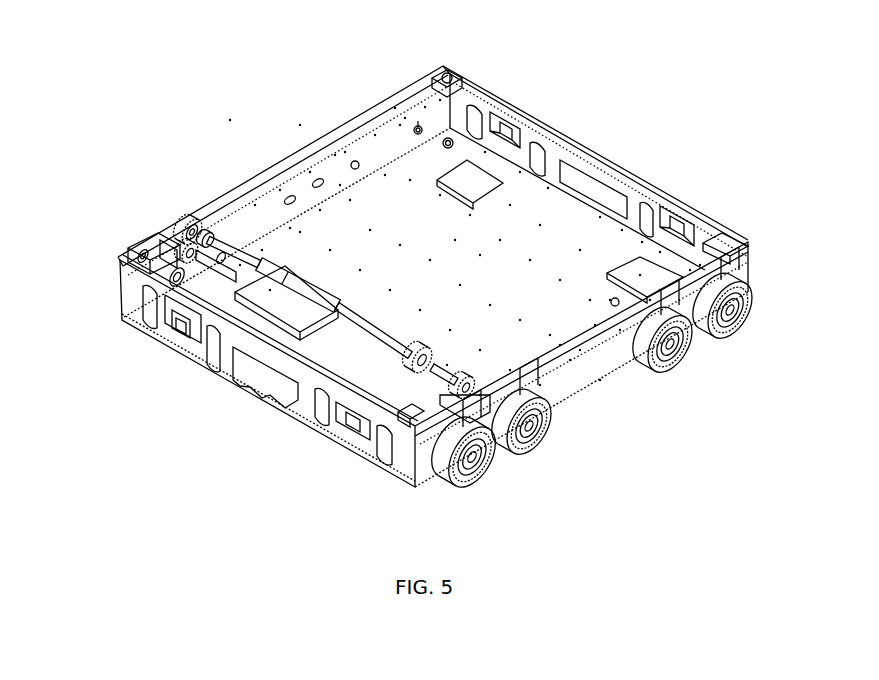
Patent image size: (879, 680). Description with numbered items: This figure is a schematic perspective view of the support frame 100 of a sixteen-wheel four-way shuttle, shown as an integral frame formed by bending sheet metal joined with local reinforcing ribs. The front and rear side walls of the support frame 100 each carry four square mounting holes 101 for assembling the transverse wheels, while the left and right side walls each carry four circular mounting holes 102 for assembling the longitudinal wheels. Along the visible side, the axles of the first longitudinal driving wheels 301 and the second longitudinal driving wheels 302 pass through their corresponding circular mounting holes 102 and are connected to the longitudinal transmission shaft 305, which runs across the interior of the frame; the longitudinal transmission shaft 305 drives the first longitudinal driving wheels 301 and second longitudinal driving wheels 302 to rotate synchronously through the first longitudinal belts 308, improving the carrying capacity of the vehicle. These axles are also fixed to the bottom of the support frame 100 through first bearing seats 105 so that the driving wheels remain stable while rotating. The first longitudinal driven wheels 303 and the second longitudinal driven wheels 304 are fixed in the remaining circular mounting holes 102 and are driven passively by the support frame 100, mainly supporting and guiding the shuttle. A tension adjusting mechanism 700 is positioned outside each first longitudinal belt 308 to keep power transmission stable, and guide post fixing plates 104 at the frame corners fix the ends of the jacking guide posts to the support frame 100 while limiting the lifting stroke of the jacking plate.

The support frame 100 is at (650, 188).
The square mounting holes 101 is at (538, 133).
The circular mounting holes 102 is at (418, 126).
The guide post fixing plates 104 is at (455, 72).
The first bearing seats 105 is at (176, 345).
The first longitudinal driving wheels 301 is at (448, 462).
The second longitudinal driving wheels 302 is at (520, 438).
The first longitudinal driven wheels 303 is at (650, 362).
The second longitudinal driven wheels 304 is at (716, 338).
The longitudinal transmission shaft 305 is at (364, 330).
The first longitudinal belts 308 is at (118, 265).
The tension adjusting mechanism 700 is at (222, 238).